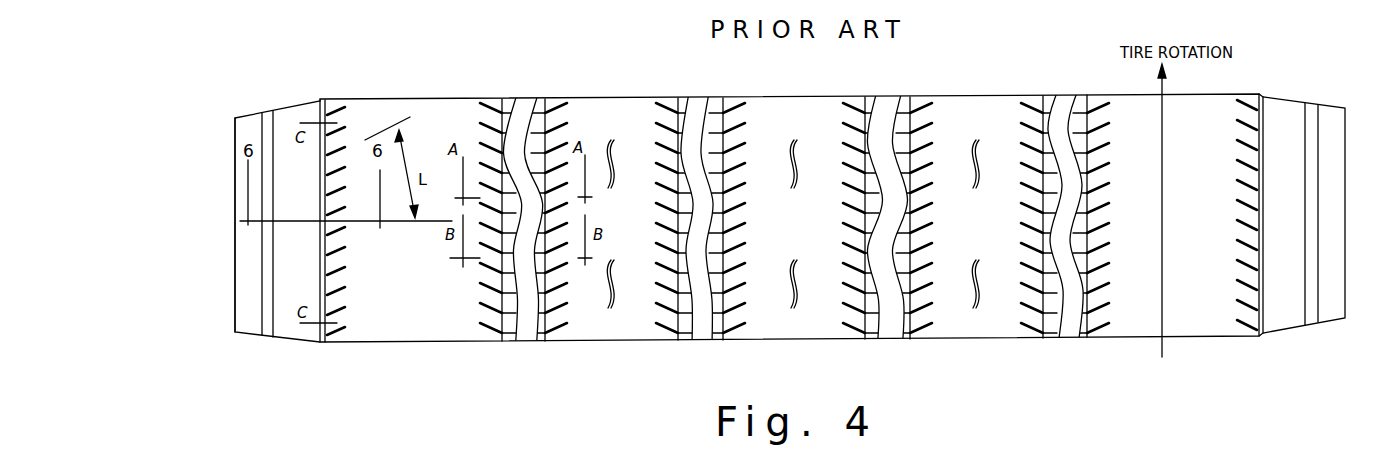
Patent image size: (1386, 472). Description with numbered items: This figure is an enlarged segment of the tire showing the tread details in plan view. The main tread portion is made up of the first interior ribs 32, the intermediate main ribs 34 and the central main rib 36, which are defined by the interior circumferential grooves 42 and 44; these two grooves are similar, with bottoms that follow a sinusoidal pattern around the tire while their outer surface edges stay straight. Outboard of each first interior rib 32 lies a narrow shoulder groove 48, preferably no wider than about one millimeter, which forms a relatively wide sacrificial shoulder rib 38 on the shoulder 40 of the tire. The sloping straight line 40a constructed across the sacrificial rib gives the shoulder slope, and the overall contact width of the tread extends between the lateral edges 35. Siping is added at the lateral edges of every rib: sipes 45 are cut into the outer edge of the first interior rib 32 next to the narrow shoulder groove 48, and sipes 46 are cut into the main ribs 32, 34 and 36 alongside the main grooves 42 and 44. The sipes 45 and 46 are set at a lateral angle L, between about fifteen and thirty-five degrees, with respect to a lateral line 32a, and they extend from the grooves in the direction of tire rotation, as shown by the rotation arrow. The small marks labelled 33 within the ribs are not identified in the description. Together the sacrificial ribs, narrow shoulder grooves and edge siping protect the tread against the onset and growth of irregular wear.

The first interior rib 32 is at (433, 97).
The lateral line 32a is at (430, 220).
The small sipes 33 is at (973, 138).
The main rib 34 is at (633, 97).
The lateral edges 35 is at (273, 312).
The main rib 36 is at (790, 96).
The sacrificial shoulder rib 38 is at (297, 107).
The shoulder 40 is at (268, 112).
The sloping straight line 40a is at (262, 273).
The circumferential groove 42 is at (527, 107).
The circumferential groove 44 is at (700, 102).
The sipes 45 is at (340, 290).
The sipes 46 is at (487, 343).
The narrow shoulder groove 48 is at (323, 107).